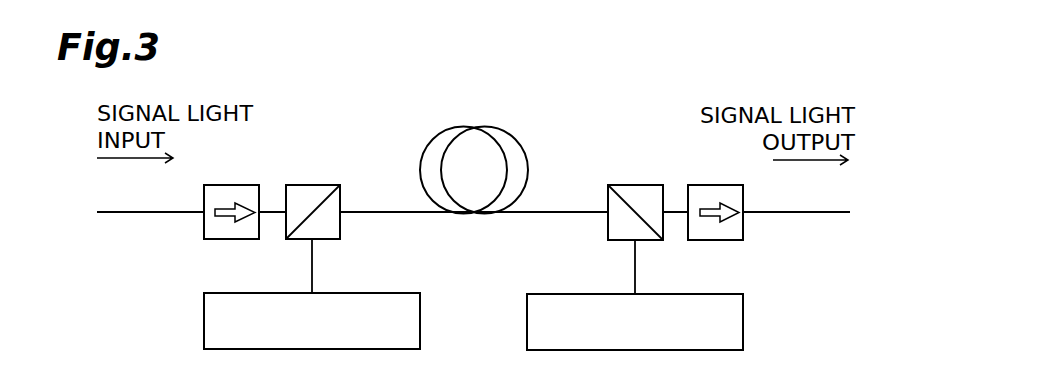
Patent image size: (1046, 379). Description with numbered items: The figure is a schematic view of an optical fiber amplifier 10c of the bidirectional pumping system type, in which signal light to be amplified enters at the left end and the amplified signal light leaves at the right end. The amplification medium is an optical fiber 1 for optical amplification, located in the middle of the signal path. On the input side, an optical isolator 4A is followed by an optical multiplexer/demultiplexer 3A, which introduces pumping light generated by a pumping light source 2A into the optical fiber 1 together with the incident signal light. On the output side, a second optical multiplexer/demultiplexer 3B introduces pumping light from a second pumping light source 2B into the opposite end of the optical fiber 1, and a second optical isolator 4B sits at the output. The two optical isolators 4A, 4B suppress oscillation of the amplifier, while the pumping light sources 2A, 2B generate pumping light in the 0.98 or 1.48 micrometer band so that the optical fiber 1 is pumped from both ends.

The optical fiber amplifier 10c is at (709, 89).
The optical fiber 1 is at (515, 138).
The pumping light source 2A is at (392, 293).
The pumping light source 2B is at (553, 294).
The optical multiplexer/demultiplexer 3A is at (312, 185).
The optical multiplexer/demultiplexer 3B is at (635, 185).
The optical isolator 4A is at (233, 185).
The optical isolator 4B is at (713, 185).